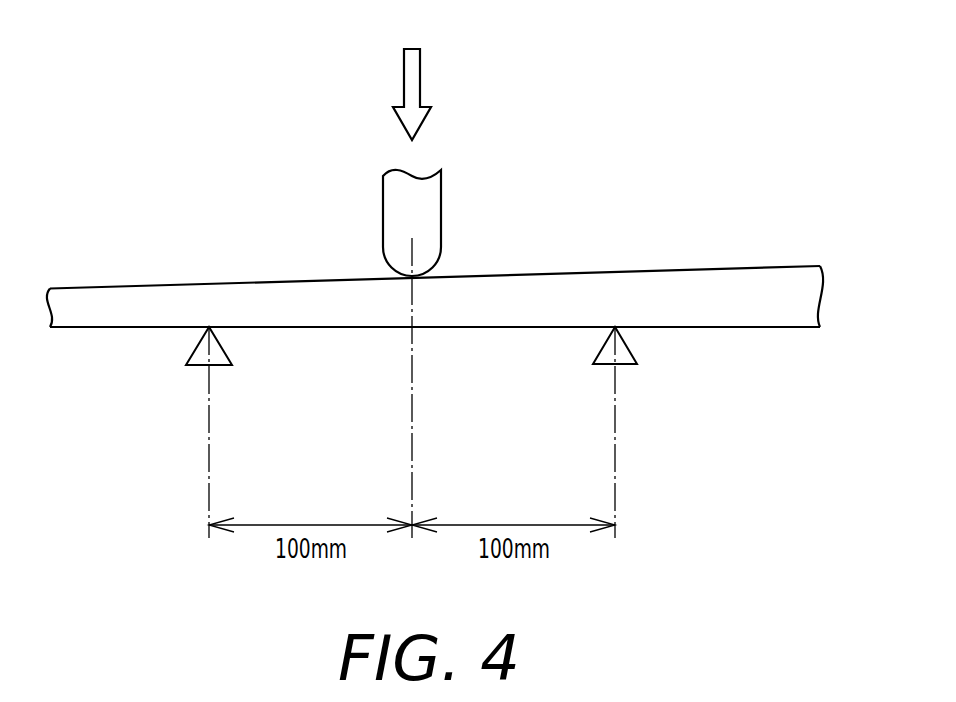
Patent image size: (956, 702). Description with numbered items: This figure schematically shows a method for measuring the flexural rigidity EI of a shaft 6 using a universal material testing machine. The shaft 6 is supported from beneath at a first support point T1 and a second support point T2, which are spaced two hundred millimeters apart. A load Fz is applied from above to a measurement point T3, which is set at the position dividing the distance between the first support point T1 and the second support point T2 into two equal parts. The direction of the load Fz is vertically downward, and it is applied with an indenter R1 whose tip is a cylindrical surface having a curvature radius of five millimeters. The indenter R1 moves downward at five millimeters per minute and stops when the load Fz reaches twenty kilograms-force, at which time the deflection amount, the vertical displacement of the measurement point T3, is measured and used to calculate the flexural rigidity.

The shaft 6 is at (747, 268).
The indenter R1 is at (397, 207).
The load Fz is at (412, 75).
The first support point T1 is at (209, 327).
The second support point T2 is at (615, 327).
The measurement point T3 is at (412, 277).